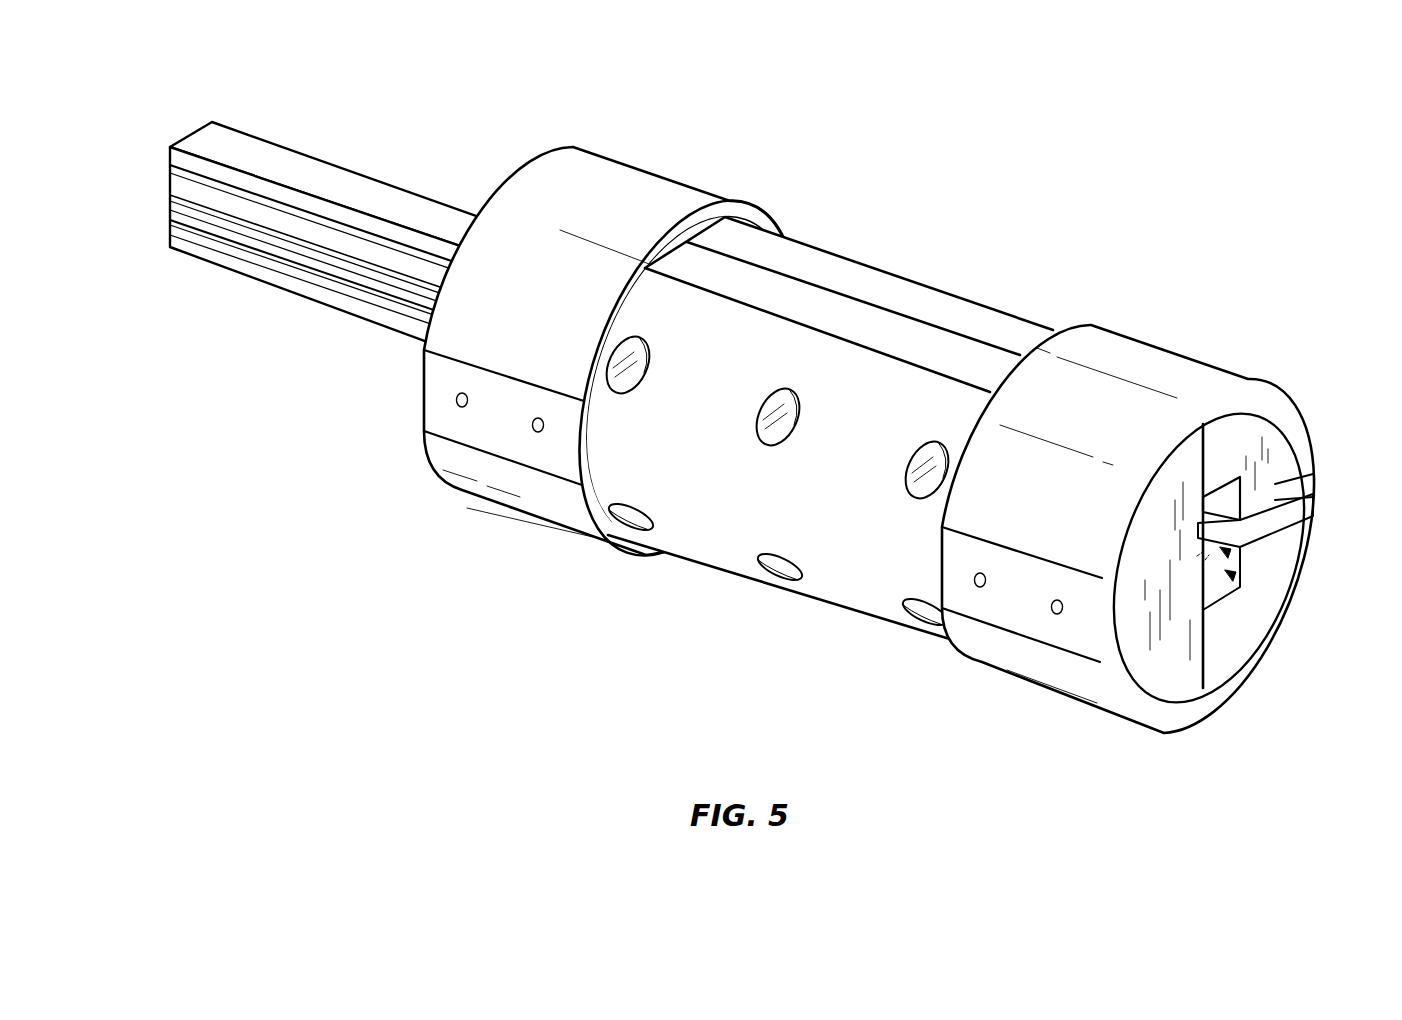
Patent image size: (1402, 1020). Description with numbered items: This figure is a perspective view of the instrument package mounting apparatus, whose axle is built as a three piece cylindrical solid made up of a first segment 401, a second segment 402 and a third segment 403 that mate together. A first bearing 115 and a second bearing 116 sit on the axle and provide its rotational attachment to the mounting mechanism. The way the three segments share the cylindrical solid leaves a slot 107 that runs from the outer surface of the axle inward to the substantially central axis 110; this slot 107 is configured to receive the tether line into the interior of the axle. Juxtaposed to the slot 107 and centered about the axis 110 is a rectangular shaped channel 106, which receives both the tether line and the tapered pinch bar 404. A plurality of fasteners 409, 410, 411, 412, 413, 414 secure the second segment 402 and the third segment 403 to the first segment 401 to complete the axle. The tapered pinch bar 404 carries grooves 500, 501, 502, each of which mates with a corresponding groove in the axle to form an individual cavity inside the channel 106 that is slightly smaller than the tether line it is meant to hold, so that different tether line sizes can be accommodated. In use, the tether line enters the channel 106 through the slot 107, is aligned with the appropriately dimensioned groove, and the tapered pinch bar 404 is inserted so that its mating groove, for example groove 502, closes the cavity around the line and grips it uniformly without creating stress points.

The rectangular shaped channel 106 is at (1242, 556).
The slot 107 is at (1290, 518).
The central axis 110 is at (1235, 574).
The first bearing 115 is at (510, 480).
The second bearing 116 is at (1057, 673).
The first segment 401 is at (710, 397).
The second segment 402 is at (1233, 640).
The third segment 403 is at (857, 277).
The tapered pinch bar 404 is at (273, 157).
The fastener 409 is at (913, 622).
The fastener 410 is at (793, 587).
The fastener 411 is at (647, 543).
The fastener 412 is at (915, 491).
The fastener 413 is at (767, 446).
The fastener 414 is at (628, 393).
The groove 500 is at (290, 263).
The groove 501 is at (220, 213).
The groove 502 is at (190, 177).